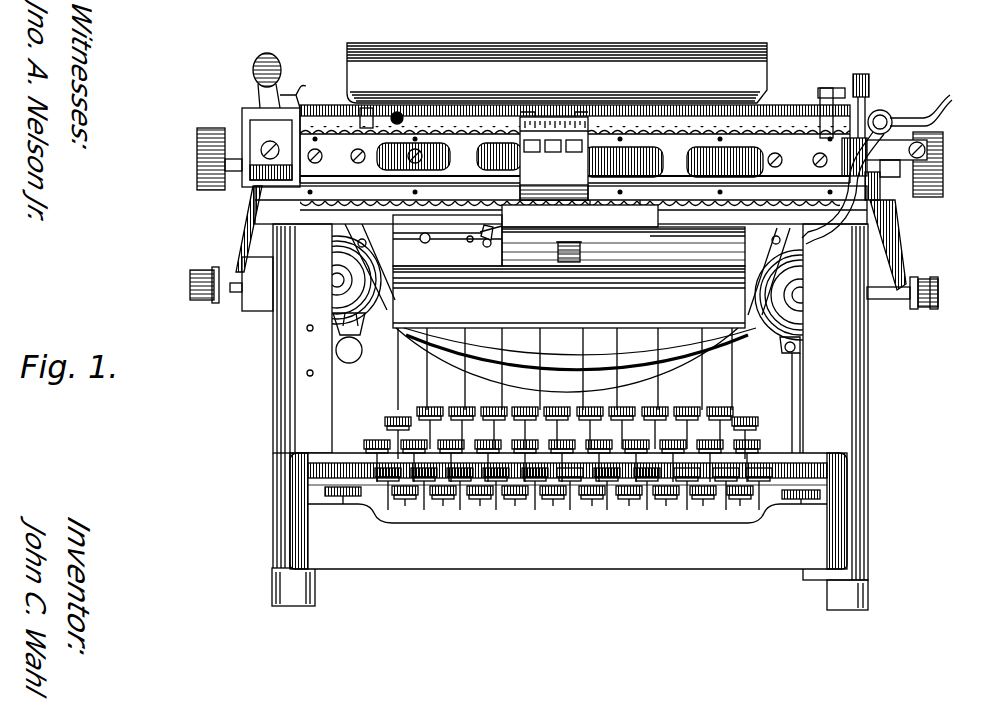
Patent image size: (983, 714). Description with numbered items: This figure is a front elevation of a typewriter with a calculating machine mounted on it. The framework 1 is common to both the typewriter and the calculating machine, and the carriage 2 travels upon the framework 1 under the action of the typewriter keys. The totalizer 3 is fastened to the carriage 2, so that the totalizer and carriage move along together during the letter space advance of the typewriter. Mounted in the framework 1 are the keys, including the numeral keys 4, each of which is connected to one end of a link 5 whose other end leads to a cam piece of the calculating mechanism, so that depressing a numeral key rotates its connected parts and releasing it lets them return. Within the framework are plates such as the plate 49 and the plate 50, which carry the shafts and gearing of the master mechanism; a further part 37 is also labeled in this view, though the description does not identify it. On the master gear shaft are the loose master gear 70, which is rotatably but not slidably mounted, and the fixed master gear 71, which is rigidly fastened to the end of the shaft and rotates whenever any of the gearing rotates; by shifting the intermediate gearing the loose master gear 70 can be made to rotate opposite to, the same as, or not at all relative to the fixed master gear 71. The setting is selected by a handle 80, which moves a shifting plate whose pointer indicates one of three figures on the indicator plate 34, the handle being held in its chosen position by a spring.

The framework 1 is at (273, 372).
The carriage 2 is at (206, 131).
The totalizer 3 is at (554, 156).
The numeral keys 4 is at (455, 407).
The link 5 is at (397, 371).
The indicator plate 34 is at (509, 219).
The segment rod 37 is at (447, 231).
The plate 49 is at (504, 247).
The plate 50 is at (660, 249).
The loose master gear 70 is at (582, 212).
The fixed master gear 71 is at (636, 212).
The handle 80 is at (487, 248).